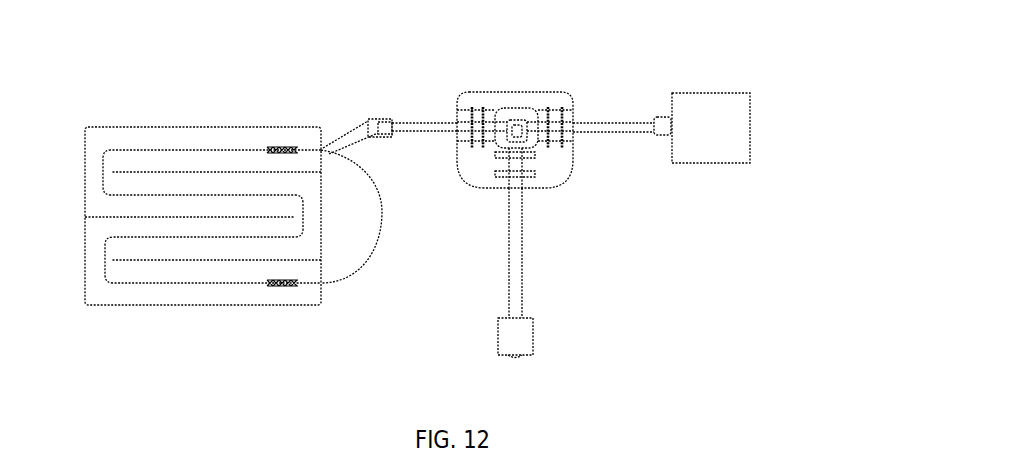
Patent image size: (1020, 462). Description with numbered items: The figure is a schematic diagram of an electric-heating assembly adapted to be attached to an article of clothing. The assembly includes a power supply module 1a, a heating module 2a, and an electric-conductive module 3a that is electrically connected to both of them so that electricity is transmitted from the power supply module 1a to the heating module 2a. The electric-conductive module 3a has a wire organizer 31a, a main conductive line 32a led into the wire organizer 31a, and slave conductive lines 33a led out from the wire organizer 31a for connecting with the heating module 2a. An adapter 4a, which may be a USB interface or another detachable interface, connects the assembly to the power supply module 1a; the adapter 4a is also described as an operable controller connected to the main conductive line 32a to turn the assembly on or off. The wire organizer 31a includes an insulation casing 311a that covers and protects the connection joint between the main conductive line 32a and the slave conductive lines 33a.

The power supply module 1a is at (733, 138).
The heating module 2a is at (193, 127).
The electric-conductive module 3a is at (556, 154).
The adapter 4a is at (663, 117).
The wire organizer 31a is at (508, 90).
The main conductive line 32a is at (515, 255).
The slave conductive lines 33a is at (408, 122).
The insulation casing 311a is at (560, 174).